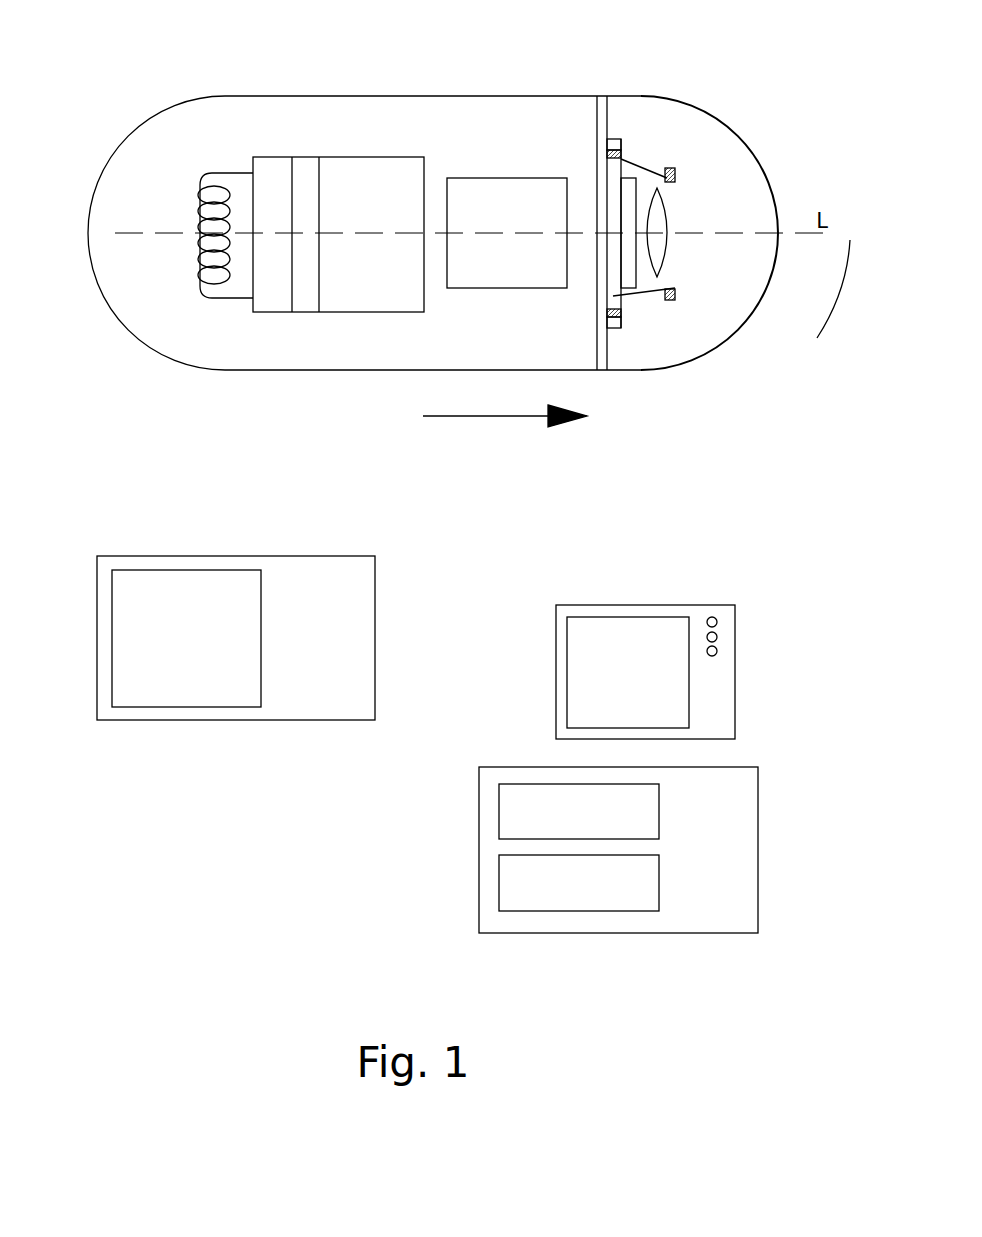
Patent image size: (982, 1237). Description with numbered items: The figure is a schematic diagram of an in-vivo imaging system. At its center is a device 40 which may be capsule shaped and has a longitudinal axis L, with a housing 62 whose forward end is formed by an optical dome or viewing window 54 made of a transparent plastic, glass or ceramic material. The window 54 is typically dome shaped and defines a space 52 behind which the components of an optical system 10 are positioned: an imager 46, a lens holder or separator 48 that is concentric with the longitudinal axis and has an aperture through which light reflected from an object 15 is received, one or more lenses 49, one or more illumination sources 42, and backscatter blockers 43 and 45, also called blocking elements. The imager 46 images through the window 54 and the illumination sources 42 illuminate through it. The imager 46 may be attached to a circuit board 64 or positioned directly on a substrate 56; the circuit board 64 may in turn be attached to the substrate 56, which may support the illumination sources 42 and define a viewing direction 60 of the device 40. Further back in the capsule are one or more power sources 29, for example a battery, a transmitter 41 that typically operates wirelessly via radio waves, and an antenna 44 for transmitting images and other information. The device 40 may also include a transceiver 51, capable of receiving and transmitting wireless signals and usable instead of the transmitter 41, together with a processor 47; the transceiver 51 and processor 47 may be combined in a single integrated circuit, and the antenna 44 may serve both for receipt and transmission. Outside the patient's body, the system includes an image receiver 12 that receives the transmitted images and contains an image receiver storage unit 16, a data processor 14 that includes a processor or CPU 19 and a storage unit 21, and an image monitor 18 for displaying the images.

The optical system 10 is at (743, 110).
The image receiver 12 is at (308, 556).
The data processor 14 is at (783, 777).
The object 15 is at (843, 278).
The image receiver storage unit 16 is at (186, 707).
The image monitor 18 is at (620, 605).
The processor and/or CPU 19 is at (659, 894).
The storage unit 21 is at (659, 822).
The power source 29 is at (507, 178).
The device 40 is at (278, 77).
The transmitter 41 is at (341, 157).
The illumination source 42 is at (621, 145).
The backscatter blocker 43 is at (675, 176).
The antenna 44 is at (197, 180).
The backscatter blocker 45 is at (613, 297).
The imager 46 is at (637, 270).
The processor 47 is at (278, 312).
The lens holder 48 is at (647, 170).
The lens 49 is at (667, 218).
The transceiver 51 is at (305, 157).
The space 52 is at (752, 255).
The viewing window 54 is at (665, 97).
The substrate 56 is at (597, 122).
The viewing direction 60 is at (493, 416).
The housing 62 is at (278, 372).
The circuit board 64 is at (670, 297).